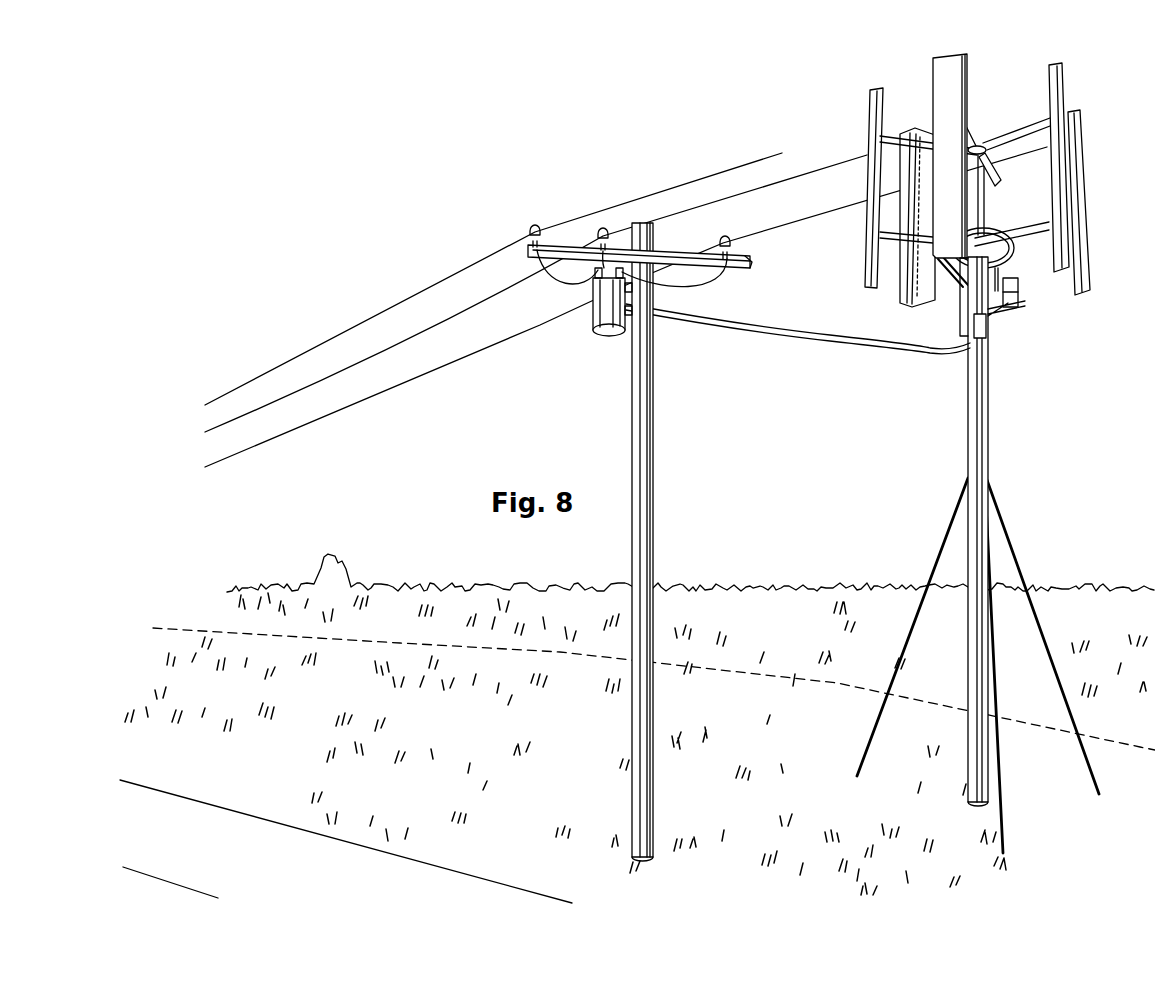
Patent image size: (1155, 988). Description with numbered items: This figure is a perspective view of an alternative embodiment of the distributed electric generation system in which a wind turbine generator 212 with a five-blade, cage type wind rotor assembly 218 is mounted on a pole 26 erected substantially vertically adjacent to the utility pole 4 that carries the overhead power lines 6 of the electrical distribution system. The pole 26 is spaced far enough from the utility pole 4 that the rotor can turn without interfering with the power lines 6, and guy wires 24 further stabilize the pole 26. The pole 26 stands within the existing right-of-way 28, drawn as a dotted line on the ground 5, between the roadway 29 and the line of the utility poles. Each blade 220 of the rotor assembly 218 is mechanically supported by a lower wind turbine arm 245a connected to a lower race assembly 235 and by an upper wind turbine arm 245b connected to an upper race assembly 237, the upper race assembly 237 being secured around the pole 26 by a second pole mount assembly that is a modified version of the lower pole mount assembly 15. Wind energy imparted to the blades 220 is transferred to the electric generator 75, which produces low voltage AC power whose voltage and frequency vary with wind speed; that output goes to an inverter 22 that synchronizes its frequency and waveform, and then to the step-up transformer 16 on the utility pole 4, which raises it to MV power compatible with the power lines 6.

The utility pole 4 is at (653, 419).
The ground 5 is at (351, 683).
The overhead power lines 6 is at (387, 392).
The pole mount assembly 15 is at (960, 270).
The step-up transformer 16 is at (596, 321).
The inverter 22 is at (974, 324).
The guy wires 24 is at (1015, 554).
The pole 26 is at (968, 388).
The right-of-way 28 is at (730, 665).
The roadway 29 is at (154, 812).
The electric generator 75 is at (1020, 301).
The wind turbine generator 212 is at (1092, 171).
The wind rotor assembly 218 is at (1015, 174).
The blades 220 is at (1053, 69).
The lower race assembly 235 is at (1014, 262).
The upper race assembly 237 is at (980, 146).
The lower wind turbine arm 245a is at (891, 262).
The upper wind turbine arm 245b is at (893, 133).